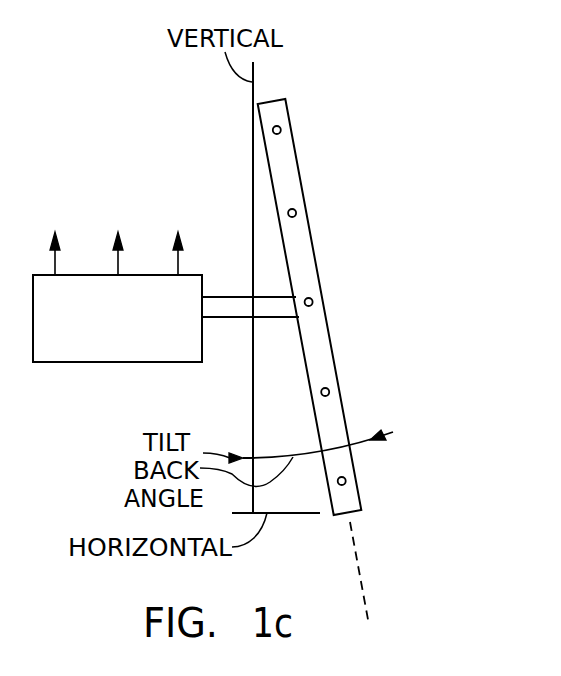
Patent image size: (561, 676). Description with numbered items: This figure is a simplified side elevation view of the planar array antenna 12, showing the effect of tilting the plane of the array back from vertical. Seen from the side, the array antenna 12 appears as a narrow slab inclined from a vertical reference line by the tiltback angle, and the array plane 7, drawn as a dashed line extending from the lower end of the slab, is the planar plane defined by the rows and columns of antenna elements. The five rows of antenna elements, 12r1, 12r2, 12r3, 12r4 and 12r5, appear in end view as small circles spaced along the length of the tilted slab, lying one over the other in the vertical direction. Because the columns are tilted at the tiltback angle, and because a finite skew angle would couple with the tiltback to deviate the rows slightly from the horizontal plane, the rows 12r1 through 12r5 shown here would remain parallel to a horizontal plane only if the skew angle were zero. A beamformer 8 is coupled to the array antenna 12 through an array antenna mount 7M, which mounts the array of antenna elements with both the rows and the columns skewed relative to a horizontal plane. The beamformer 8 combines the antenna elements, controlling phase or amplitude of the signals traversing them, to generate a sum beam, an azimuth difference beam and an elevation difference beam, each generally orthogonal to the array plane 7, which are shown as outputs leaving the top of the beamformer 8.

The array antenna 12 is at (345, 102).
The first row of antenna elements 12r1 is at (292, 123).
The second row of antenna elements 12r2 is at (310, 205).
The third row of antenna elements 12r3 is at (328, 295).
The fourth row of antenna elements 12r4 is at (345, 387).
The fifth row of antenna elements 12r5 is at (363, 477).
The beamformer 8 is at (140, 362).
The array antenna mount 7M is at (226, 312).
The array plane 7 is at (360, 562).